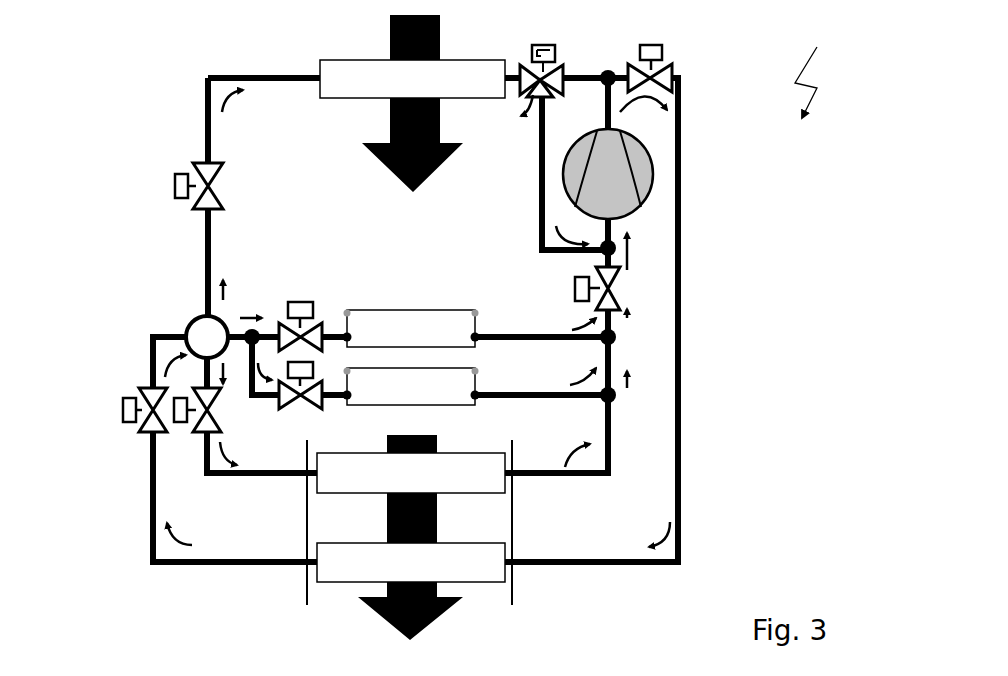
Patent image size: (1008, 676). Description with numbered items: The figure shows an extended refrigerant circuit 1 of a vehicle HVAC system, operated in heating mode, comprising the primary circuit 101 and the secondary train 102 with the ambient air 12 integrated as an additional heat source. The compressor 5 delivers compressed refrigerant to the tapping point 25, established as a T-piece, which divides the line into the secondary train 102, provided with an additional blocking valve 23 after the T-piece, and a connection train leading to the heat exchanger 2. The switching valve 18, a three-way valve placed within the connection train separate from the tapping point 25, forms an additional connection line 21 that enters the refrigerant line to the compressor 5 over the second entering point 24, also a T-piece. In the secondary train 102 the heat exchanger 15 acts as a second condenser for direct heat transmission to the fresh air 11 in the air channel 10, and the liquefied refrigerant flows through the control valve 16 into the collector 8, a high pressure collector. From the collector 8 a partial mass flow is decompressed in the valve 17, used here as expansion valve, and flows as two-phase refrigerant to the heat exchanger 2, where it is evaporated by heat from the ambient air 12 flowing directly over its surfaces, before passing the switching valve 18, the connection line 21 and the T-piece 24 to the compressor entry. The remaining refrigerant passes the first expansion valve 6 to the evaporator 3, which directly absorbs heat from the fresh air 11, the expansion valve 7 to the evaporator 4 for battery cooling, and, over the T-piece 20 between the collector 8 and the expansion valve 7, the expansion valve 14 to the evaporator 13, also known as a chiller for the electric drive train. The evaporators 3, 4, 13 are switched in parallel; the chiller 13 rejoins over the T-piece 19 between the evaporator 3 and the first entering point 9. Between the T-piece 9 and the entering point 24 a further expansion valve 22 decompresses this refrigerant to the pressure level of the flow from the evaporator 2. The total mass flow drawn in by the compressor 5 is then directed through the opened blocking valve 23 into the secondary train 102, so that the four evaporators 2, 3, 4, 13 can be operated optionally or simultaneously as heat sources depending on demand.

The refrigerant circuit 1 is at (814, 69).
The heat exchanger 2 is at (338, 75).
The evaporator 3 is at (472, 472).
The evaporator 4 is at (418, 322).
The compressor 5 is at (647, 173).
The first expansion valve 6 is at (213, 410).
The expansion valve 7 is at (300, 306).
The collector 8 is at (203, 325).
The entering point 9 is at (615, 343).
The air channel 10 is at (483, 595).
The fresh air 11 is at (377, 612).
The ambient air 12 is at (442, 43).
The heat exchanger 13 is at (420, 378).
The expansion valve 14 is at (302, 398).
The heat exchanger 15 is at (337, 563).
The control valve 16 is at (128, 395).
The expansion valve 17 is at (178, 178).
The switching valve 18 is at (557, 48).
The T-piece 19 is at (615, 400).
The T-piece 20 is at (252, 325).
The connection line 21 is at (538, 178).
The expansion valve 22 is at (615, 283).
The blocking valve 23 is at (662, 47).
The entering point 24 is at (596, 253).
The tapping point 25 is at (613, 70).
The primary circuit 101 is at (193, 98).
The secondary train 102 is at (680, 340).